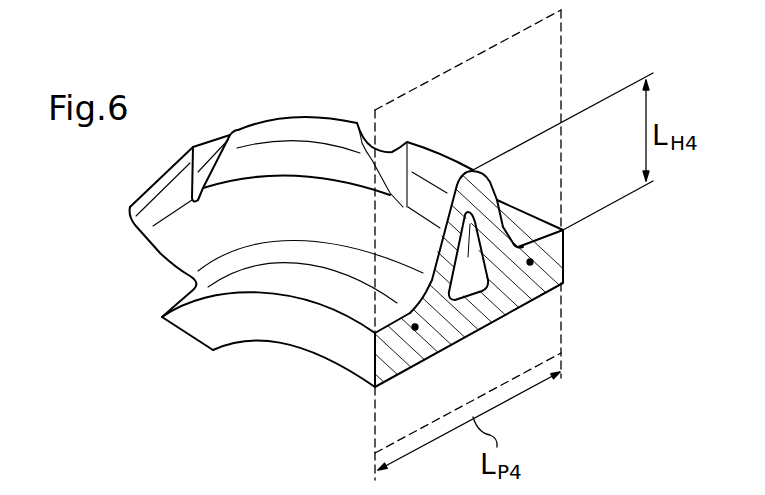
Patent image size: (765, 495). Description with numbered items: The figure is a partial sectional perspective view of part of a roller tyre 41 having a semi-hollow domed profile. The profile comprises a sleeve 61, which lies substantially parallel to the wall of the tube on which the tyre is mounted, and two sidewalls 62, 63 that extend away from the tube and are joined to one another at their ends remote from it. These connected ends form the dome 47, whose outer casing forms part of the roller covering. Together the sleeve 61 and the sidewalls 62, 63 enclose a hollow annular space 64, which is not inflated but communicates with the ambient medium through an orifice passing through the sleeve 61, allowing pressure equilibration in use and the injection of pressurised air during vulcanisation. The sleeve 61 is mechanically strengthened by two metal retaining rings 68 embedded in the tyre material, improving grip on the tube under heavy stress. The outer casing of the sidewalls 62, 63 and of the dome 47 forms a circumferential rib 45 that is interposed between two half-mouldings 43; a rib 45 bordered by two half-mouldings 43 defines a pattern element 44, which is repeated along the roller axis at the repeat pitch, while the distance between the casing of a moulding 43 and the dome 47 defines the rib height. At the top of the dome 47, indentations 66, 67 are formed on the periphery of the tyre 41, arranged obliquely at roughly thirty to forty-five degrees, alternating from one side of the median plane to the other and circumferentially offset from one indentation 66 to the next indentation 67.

The tyre 41 is at (500, 194).
The half-moulding 43 is at (283, 280).
The pattern element 44 is at (451, 68).
The circumferential rib 45 is at (471, 149).
The dome 47 is at (490, 186).
The sleeve 61 is at (482, 316).
The sidewall 62 is at (465, 290).
The sidewall 63 is at (509, 205).
The hollow annular space 64 is at (498, 294).
The indentation 66 is at (390, 163).
The indentation 67 is at (213, 160).
The metal retaining ring 68 is at (416, 329).